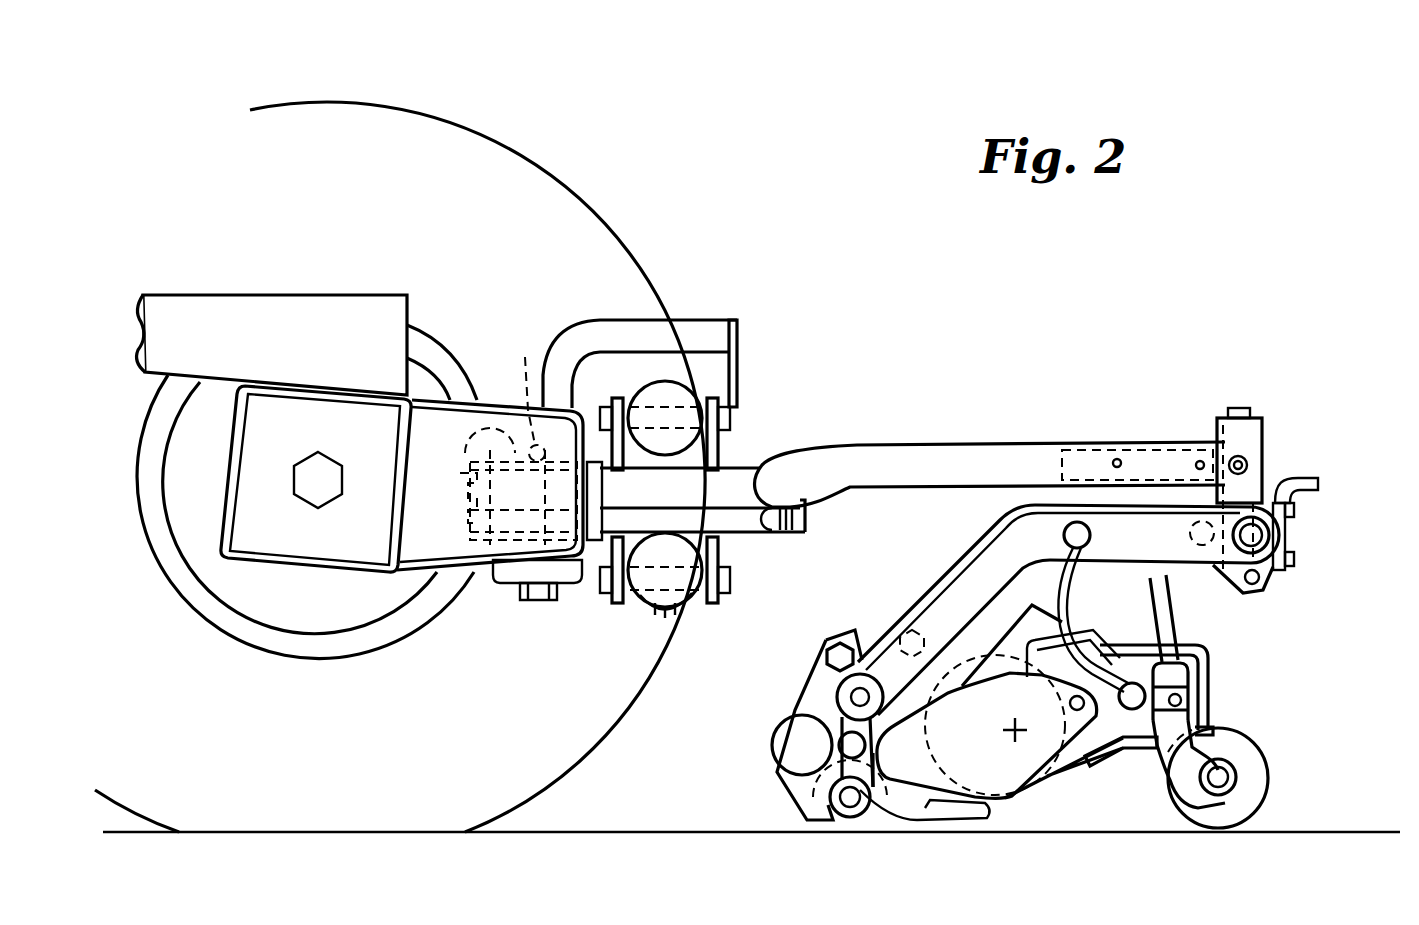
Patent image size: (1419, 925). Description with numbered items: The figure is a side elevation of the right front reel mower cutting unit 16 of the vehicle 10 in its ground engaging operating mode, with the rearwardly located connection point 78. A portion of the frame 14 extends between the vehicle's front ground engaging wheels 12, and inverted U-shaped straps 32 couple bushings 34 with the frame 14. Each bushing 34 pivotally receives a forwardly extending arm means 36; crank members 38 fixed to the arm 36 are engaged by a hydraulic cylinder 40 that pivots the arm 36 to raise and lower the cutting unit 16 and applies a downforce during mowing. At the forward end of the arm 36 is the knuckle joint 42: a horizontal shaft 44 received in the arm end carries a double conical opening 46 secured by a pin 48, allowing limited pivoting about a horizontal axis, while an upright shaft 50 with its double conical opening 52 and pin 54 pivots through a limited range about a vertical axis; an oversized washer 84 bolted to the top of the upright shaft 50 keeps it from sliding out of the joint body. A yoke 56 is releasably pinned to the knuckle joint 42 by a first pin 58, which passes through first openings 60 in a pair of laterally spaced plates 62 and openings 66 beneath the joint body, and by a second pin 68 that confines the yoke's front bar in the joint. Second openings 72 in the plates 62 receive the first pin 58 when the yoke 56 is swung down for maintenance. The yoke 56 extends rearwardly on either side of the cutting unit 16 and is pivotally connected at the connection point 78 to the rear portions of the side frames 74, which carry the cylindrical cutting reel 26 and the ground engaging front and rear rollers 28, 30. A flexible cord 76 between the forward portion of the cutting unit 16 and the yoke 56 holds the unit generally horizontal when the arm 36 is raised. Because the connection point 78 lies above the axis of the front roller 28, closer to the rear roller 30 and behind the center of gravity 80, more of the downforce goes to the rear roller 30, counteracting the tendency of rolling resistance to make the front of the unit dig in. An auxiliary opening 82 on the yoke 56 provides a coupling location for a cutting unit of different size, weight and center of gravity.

The vehicle 10 is at (765, 105).
The ground engaging wheels 12 is at (522, 157).
The frame 14 is at (497, 397).
The reel mower cutting unit 16 is at (1290, 710).
The cutting reel 26 is at (1030, 790).
The front roller 28 is at (1258, 748).
The rear roller 30 is at (820, 815).
The inverted U-shaped straps 32 is at (526, 394).
The bushings 34 is at (472, 445).
The arm means 36 is at (903, 443).
The crank members 38 is at (620, 397).
The hydraulic cylinder 40 is at (677, 400).
The knuckle joint 42 is at (1325, 479).
The horizontal shaft 44 is at (1068, 450).
The double conical opening 46 is at (1114, 460).
The pin 48 is at (1119, 458).
The upright shaft 50 is at (1220, 425).
The double conical opening 52 is at (1248, 462).
The pin 54 is at (1264, 470).
The yoke 56 is at (965, 556).
The first pin 58 is at (1265, 587).
The first openings 60 is at (1262, 577).
The laterally spaced plates 62 is at (1217, 573).
The openings 66 is at (1263, 588).
The second pin 68 is at (1312, 500).
The second openings 72 is at (1190, 534).
The side frames 74 is at (1090, 758).
The cord 76 is at (1065, 596).
The connection point 78 is at (903, 632).
The center of gravity 80 is at (995, 725).
The auxiliary opening 82 is at (852, 693).
The oversized washer 84 is at (1245, 418).